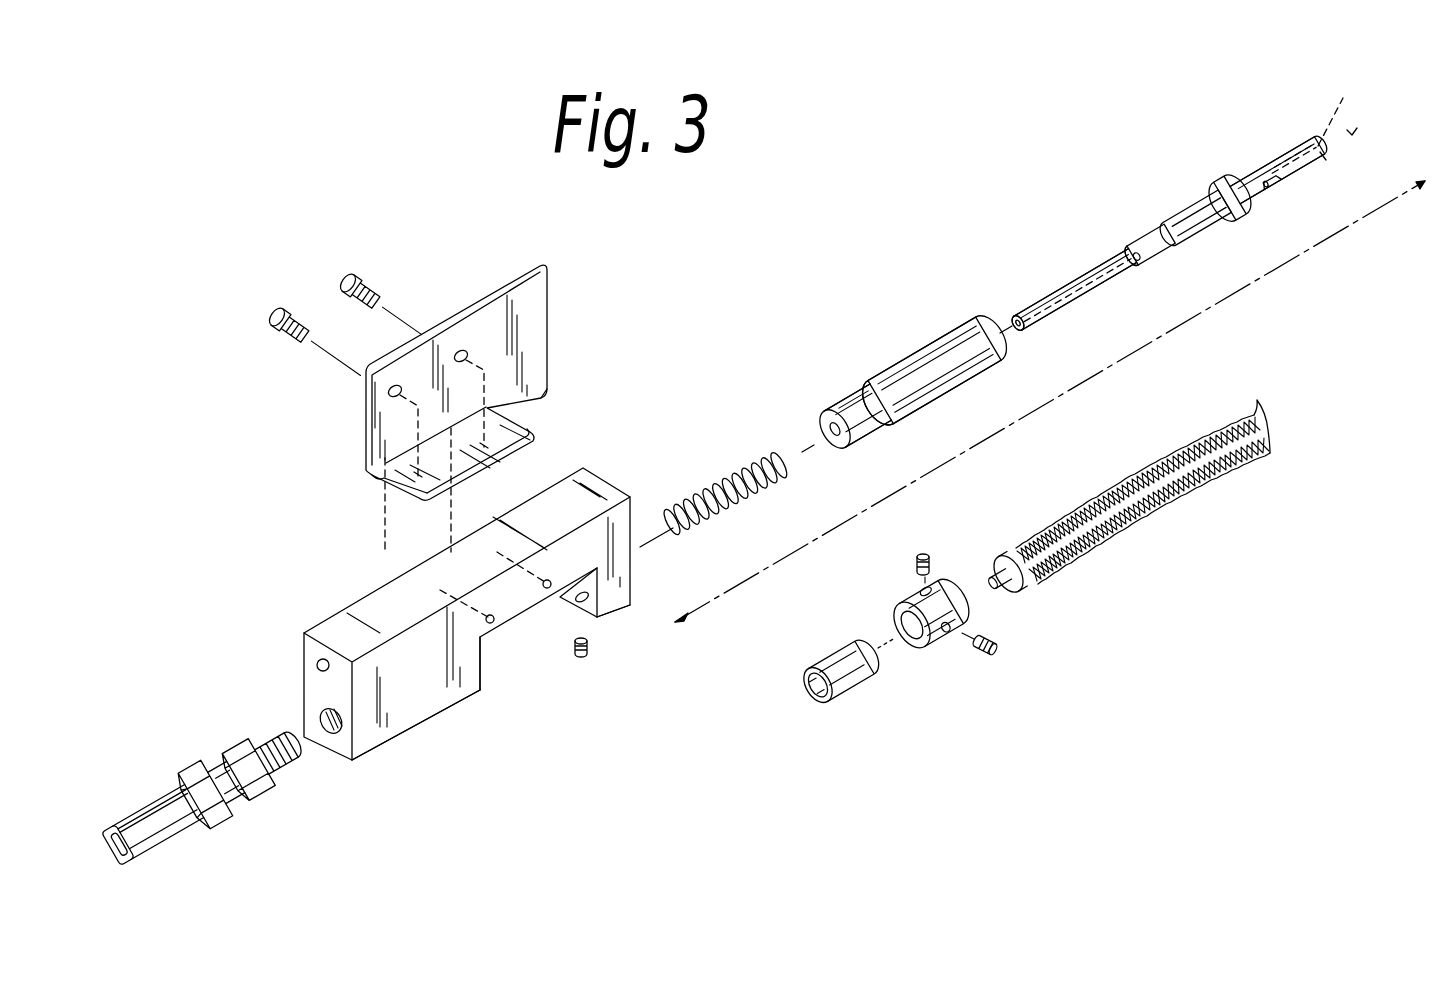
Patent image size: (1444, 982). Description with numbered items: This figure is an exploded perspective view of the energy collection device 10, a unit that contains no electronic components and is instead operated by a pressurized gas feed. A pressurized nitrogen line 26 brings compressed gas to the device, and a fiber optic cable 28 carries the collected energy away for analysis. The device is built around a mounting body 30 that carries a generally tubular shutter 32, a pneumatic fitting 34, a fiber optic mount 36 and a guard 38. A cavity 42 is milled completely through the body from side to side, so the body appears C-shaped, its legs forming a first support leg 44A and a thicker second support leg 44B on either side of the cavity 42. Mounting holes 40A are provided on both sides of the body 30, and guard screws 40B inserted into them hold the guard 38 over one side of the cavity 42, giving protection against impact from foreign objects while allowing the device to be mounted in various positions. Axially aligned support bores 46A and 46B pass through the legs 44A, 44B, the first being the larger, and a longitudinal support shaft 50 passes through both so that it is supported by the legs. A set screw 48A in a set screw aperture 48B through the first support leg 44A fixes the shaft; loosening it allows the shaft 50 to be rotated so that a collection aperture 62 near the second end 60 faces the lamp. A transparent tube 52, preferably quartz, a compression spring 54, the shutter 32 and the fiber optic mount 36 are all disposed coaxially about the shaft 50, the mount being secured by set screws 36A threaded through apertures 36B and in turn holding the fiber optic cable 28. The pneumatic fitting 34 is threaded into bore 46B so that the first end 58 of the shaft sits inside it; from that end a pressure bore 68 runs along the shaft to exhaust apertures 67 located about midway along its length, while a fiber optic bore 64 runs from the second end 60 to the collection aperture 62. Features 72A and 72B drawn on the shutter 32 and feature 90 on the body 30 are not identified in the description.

The energy collection device 10 is at (822, 216).
The pressurized nitrogen line 26 is at (160, 806).
The fiber optic cable 28 is at (1084, 553).
The mounting body 30 is at (326, 628).
The shutter 32 is at (926, 348).
The pneumatic fitting 34 is at (262, 802).
The fiber optic mount 36 is at (938, 582).
The set screws 36A is at (915, 563).
The threaded apertures 36B is at (998, 647).
The guard 38 is at (530, 322).
The mounting holes 40A is at (545, 580).
The guard screws 40B is at (340, 283).
The cavity 42 is at (480, 736).
The first support leg 44A is at (616, 604).
The second support leg 44B is at (408, 738).
The support bore 46A is at (577, 588).
The support bore 46B is at (335, 734).
The set screw 48A is at (586, 660).
The set screw aperture 48B is at (600, 580).
The longitudinal support shaft 50 is at (1172, 214).
The transparent tube 52 is at (872, 686).
The compression spring 54 is at (752, 450).
The first end 58 is at (1016, 330).
The second end 60 is at (1320, 154).
The collection aperture 62 is at (1268, 206).
The fiber optic bore 64 is at (1345, 109).
The exhaust apertures 67 is at (1134, 264).
The pressure bore 68 is at (1023, 312).
The inner sleeve 72A is at (830, 424).
The outer sleeve 72B is at (985, 325).
The step face 90 is at (481, 667).